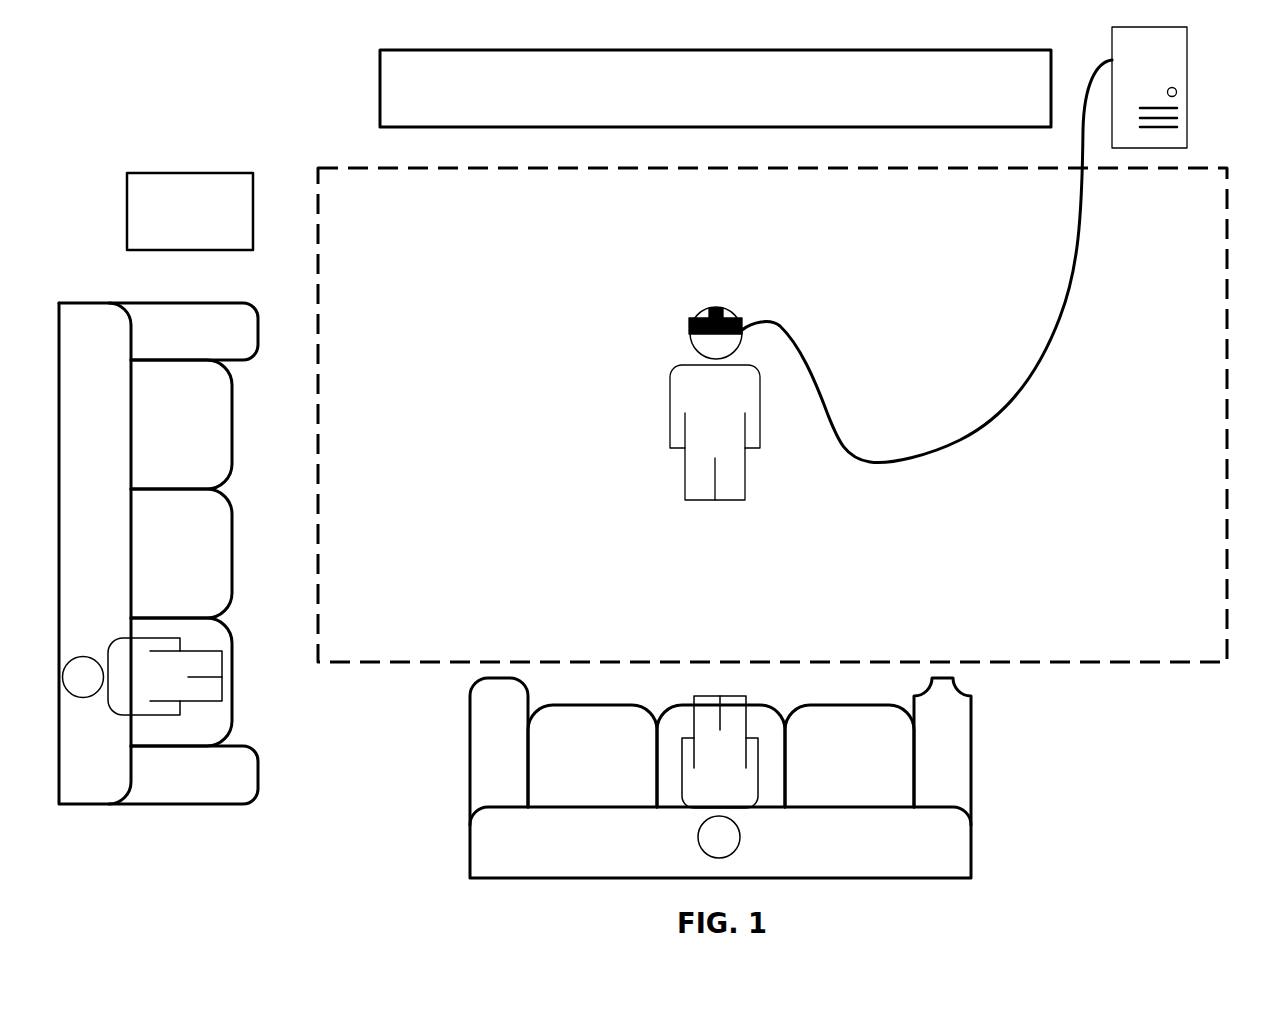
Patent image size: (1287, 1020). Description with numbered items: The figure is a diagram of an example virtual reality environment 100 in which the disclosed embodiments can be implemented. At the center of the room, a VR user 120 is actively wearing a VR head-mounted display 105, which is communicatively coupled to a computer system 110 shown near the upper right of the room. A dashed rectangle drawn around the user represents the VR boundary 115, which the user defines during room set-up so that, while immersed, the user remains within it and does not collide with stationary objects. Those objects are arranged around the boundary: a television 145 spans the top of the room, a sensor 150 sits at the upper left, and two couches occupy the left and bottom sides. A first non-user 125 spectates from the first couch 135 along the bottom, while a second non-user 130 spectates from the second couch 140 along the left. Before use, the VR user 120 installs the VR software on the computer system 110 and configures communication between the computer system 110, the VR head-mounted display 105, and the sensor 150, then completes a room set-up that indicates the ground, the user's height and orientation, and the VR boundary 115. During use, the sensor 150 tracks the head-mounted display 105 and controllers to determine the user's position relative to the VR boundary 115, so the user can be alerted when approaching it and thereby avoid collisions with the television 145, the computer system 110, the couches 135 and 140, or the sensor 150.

The virtual reality environment 100 is at (167, 105).
The VR head-mounted display 105 is at (718, 307).
The computer system 110 is at (1187, 30).
The VR boundary 115 is at (1083, 662).
The VR user 120 is at (673, 372).
The first non-user 125 is at (740, 840).
The second non-user 130 is at (217, 687).
The first couch 135 is at (950, 772).
The second couch 140 is at (185, 793).
The television 145 is at (699, 110).
The sensor 150 is at (174, 233).